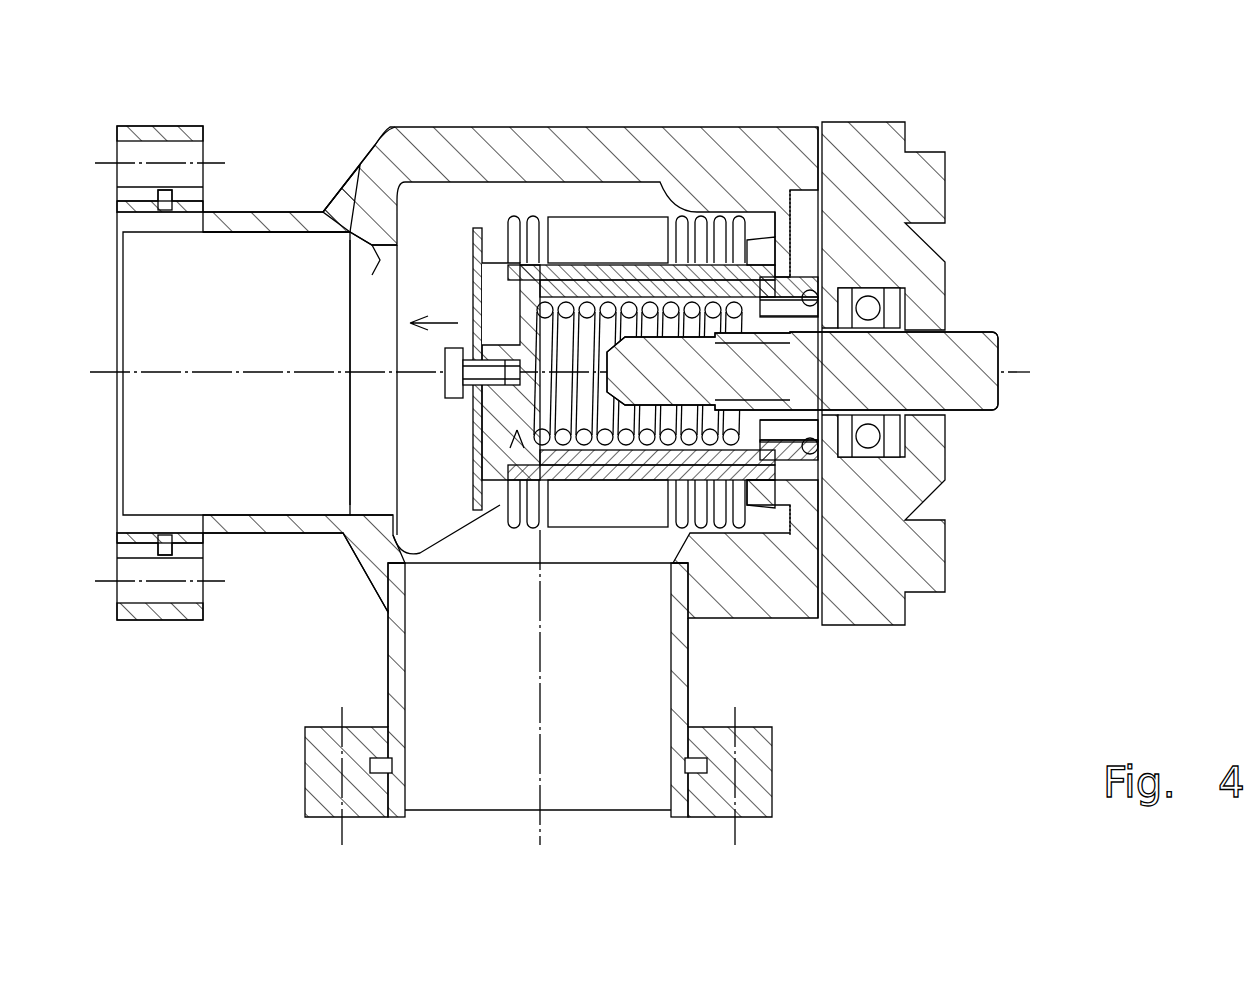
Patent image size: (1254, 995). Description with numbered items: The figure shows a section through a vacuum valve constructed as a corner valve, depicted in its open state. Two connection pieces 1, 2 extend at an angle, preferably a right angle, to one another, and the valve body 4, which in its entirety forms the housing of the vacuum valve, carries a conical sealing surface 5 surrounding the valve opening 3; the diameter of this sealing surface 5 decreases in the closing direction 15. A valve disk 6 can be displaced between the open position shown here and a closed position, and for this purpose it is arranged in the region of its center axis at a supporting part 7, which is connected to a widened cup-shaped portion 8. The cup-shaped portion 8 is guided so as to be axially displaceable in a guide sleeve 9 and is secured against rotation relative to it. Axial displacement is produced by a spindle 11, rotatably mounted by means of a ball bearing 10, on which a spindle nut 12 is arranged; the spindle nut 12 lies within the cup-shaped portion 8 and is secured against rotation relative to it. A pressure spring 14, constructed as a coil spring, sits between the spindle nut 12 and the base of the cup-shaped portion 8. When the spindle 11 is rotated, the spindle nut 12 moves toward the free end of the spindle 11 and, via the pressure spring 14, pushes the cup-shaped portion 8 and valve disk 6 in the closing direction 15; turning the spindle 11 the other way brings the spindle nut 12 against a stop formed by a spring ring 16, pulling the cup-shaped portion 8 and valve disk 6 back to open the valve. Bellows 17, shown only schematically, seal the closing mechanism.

The connection piece 1 is at (249, 218).
The connection piece 2 is at (683, 662).
The valve opening 3 is at (360, 338).
The valve body 4 is at (634, 122).
The sealing surface 5 is at (370, 245).
The valve disk 6 is at (482, 243).
The supporting part 7 is at (517, 430).
The cup-shaped portion 8 is at (550, 287).
The guide sleeve 9 is at (660, 273).
The ball bearing 10 is at (878, 298).
The spindle 11 is at (777, 363).
The spindle nut 12 is at (792, 318).
The pressure spring 14 is at (580, 307).
The closing direction 15 is at (442, 321).
The spring ring 16 is at (855, 218).
The bellows 17 is at (714, 218).